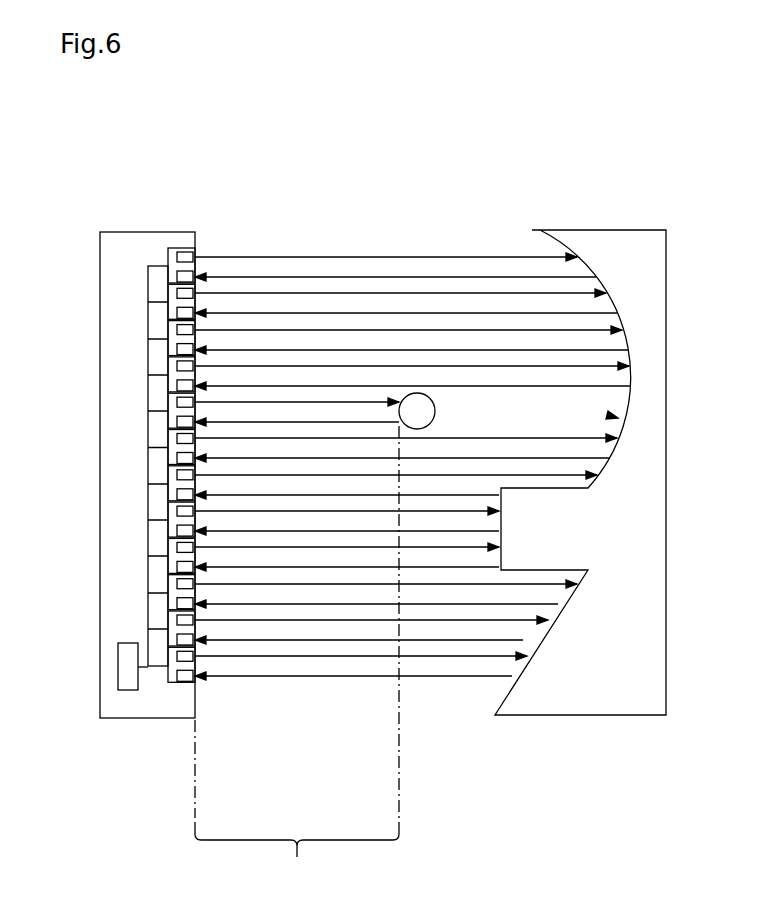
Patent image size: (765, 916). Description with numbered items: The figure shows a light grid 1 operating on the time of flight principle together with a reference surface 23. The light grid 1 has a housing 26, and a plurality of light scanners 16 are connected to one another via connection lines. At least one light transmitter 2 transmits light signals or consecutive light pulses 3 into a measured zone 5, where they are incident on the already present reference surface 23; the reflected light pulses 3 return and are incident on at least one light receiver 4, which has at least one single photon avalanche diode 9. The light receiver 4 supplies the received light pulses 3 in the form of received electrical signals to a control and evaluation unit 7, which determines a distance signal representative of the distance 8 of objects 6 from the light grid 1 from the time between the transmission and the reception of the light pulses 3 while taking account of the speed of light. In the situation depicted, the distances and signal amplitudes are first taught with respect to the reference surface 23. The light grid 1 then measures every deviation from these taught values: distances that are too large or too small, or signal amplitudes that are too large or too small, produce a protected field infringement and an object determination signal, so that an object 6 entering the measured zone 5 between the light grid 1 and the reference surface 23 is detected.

The light grid 1 is at (303, 142).
The light transmitter 2 is at (187, 253).
The light pulses 3 is at (378, 257).
The light receiver 4 is at (188, 273).
The measured zone 5 is at (562, 190).
The object 6 is at (421, 407).
The control and evaluation unit 7 is at (130, 672).
The distance 8 is at (297, 661).
The single photon avalanche diode 9 is at (183, 267).
The light scanner 16 is at (167, 365).
The reference surface 23 is at (618, 418).
The housing 26 is at (100, 510).